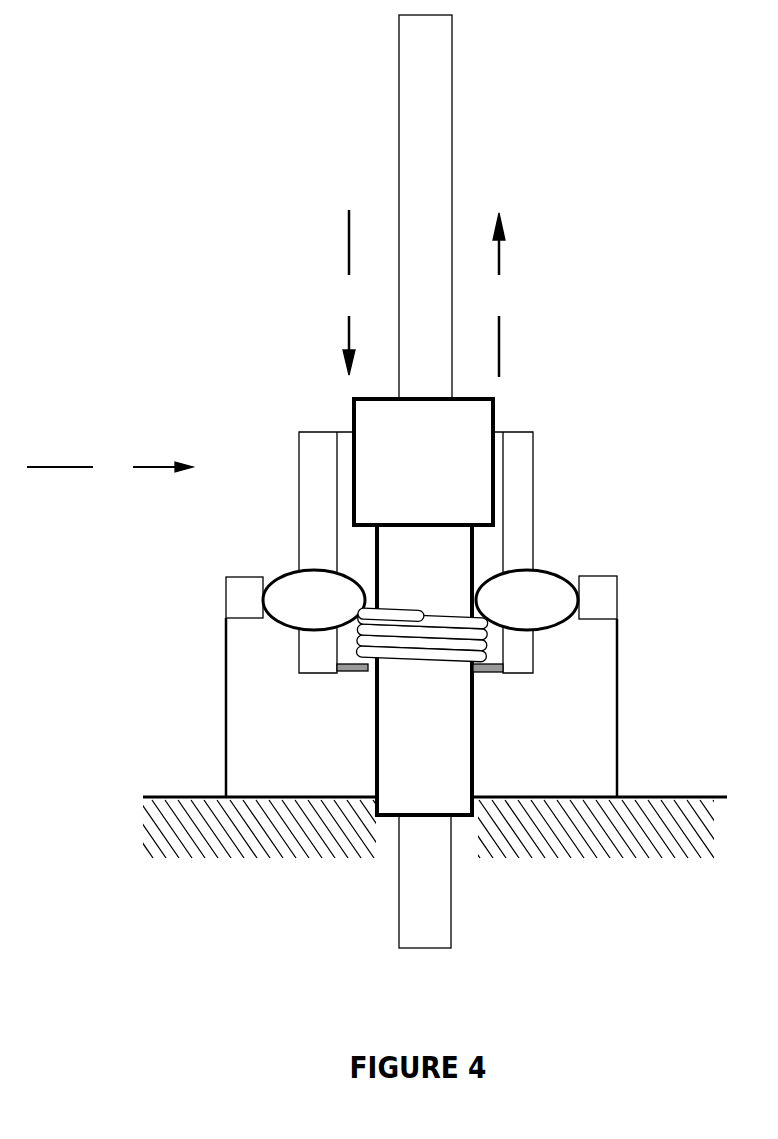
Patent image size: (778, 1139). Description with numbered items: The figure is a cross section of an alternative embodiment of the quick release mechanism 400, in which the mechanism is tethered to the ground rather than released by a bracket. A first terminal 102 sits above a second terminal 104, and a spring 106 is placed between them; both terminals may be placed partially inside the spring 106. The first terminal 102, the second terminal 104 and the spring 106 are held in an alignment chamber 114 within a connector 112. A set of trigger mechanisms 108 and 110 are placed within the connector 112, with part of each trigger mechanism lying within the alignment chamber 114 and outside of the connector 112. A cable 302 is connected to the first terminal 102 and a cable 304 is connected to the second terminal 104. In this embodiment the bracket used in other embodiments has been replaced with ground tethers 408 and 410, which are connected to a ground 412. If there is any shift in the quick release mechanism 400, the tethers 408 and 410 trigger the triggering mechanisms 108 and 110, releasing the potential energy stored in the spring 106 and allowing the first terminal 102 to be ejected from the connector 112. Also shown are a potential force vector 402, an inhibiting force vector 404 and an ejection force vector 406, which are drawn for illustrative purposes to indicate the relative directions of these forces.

The first terminal 102 is at (423, 462).
The second terminal 104 is at (424, 737).
The spring 106 is at (345, 673).
The trigger mechanism 108 is at (527, 600).
The trigger mechanism 110 is at (314, 600).
The connector 112 is at (299, 432).
The alignment chamber 114 is at (405, 592).
The cable 302 is at (425, 207).
The cable 304 is at (425, 881).
The quick release mechanism 400 is at (656, 112).
The potential force vector 402 is at (349, 292).
The inhibiting force vector 404 is at (110, 467).
The ejection force vector 406 is at (499, 295).
The ground tether 408 is at (224, 709).
The ground tether 410 is at (617, 698).
The ground 412 is at (426, 841).